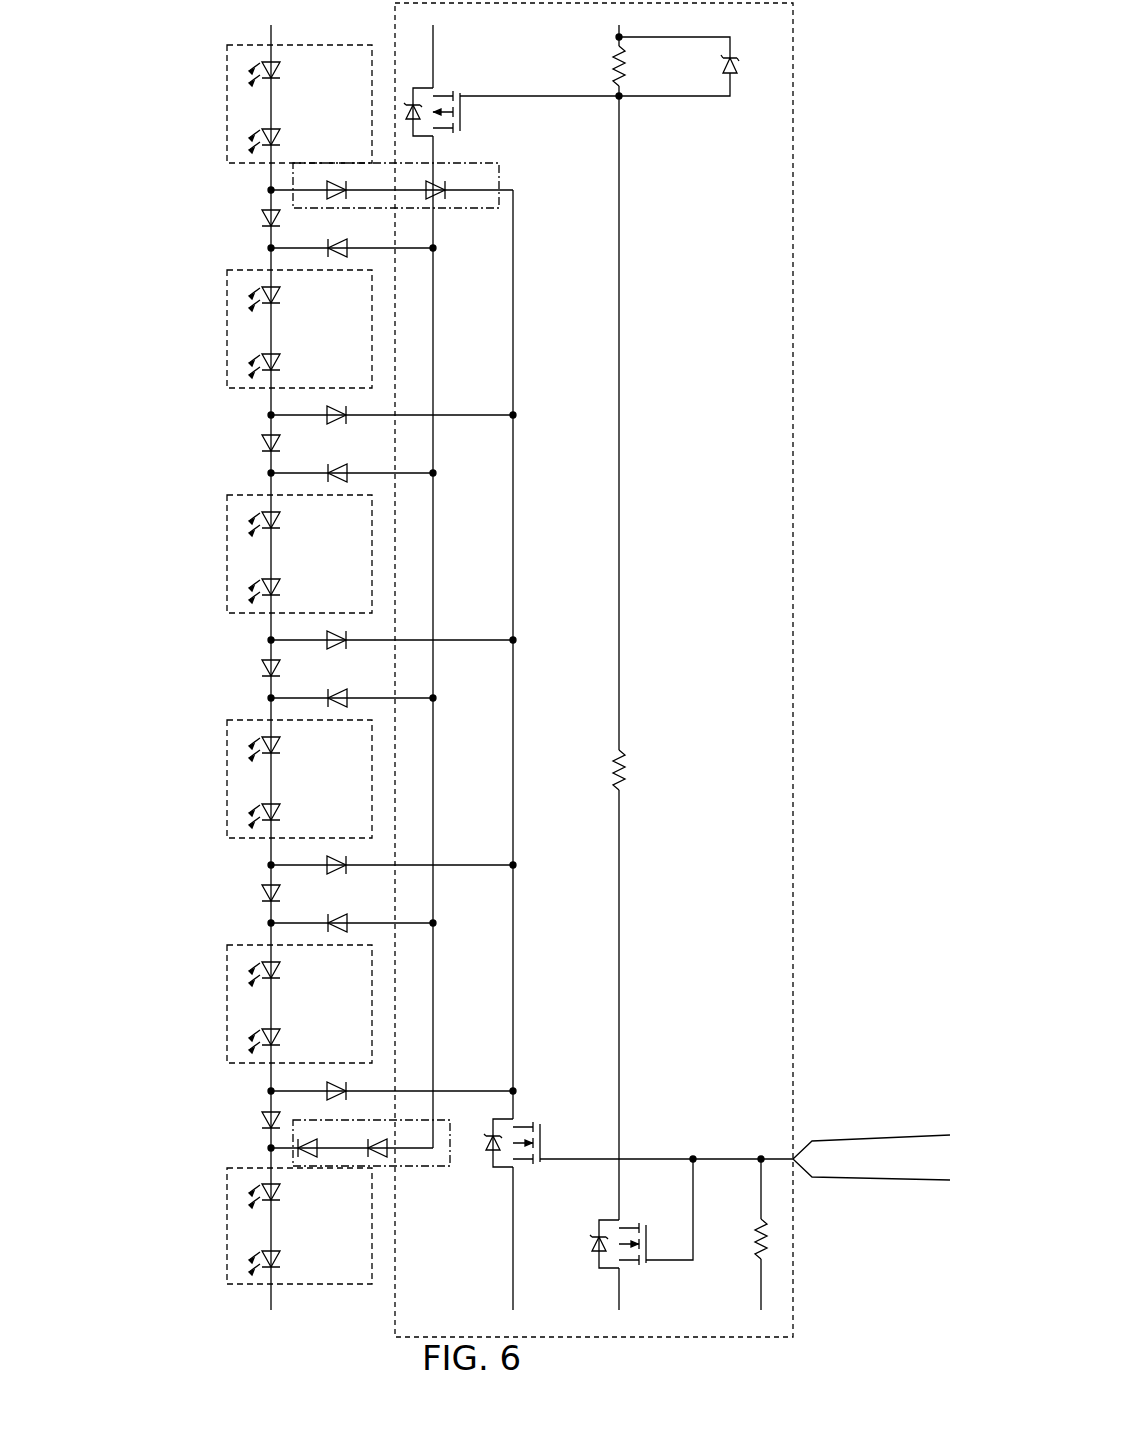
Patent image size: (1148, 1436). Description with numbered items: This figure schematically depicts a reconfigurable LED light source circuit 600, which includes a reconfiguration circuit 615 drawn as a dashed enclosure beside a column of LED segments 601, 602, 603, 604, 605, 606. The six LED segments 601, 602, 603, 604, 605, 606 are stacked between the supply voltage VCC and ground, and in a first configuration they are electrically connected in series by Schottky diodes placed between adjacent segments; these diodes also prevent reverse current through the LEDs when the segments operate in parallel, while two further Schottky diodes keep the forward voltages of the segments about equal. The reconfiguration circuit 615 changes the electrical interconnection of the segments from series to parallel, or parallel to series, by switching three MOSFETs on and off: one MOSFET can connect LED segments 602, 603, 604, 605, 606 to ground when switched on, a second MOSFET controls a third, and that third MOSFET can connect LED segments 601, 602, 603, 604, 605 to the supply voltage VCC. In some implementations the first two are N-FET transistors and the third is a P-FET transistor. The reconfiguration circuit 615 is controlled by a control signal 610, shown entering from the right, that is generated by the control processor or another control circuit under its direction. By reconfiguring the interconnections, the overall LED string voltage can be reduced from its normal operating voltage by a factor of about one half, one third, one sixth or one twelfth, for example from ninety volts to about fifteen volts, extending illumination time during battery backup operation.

The reconfigurable LED light source circuit 600 is at (150, 48).
The LED segment 601 is at (160, 1268).
The LED segment 602 is at (160, 1048).
The LED segment 603 is at (160, 823).
The LED segment 604 is at (160, 598).
The LED segment 605 is at (160, 373).
The LED segment 606 is at (160, 148).
The control signal 610 is at (893, 1140).
The reconfiguration circuit 615 is at (793, 568).